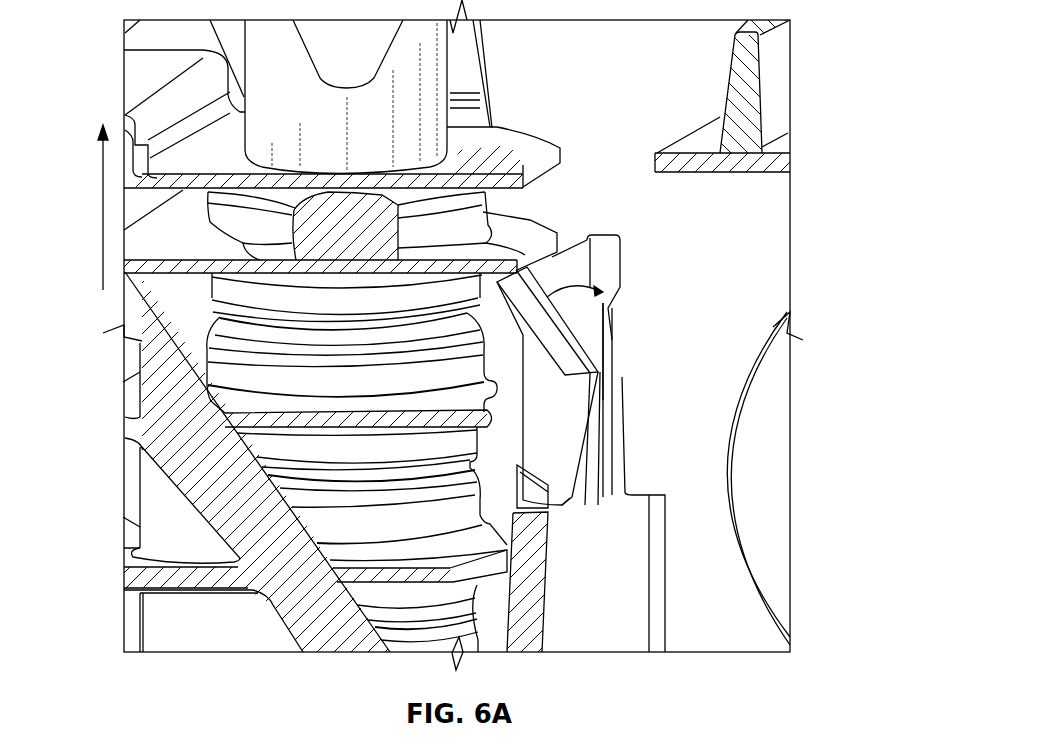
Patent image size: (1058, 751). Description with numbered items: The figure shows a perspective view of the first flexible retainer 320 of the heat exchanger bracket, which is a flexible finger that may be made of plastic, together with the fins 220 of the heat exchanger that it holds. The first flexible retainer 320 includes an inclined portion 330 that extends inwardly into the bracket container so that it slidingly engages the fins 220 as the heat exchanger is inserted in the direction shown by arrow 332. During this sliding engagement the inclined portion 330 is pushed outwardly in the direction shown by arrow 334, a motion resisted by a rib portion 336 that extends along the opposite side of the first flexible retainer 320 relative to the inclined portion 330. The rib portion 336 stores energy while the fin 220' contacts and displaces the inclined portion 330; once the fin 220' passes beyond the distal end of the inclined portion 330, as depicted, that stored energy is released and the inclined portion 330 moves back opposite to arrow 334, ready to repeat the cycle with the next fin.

The fins 220 is at (411, 462).
The fin 220' is at (375, 151).
The first flexible retainer 320 is at (628, 410).
The inclined portion 330 is at (527, 322).
The arrow 332 is at (98, 188).
The arrow 334 is at (577, 283).
The rib portion 336 is at (590, 320).